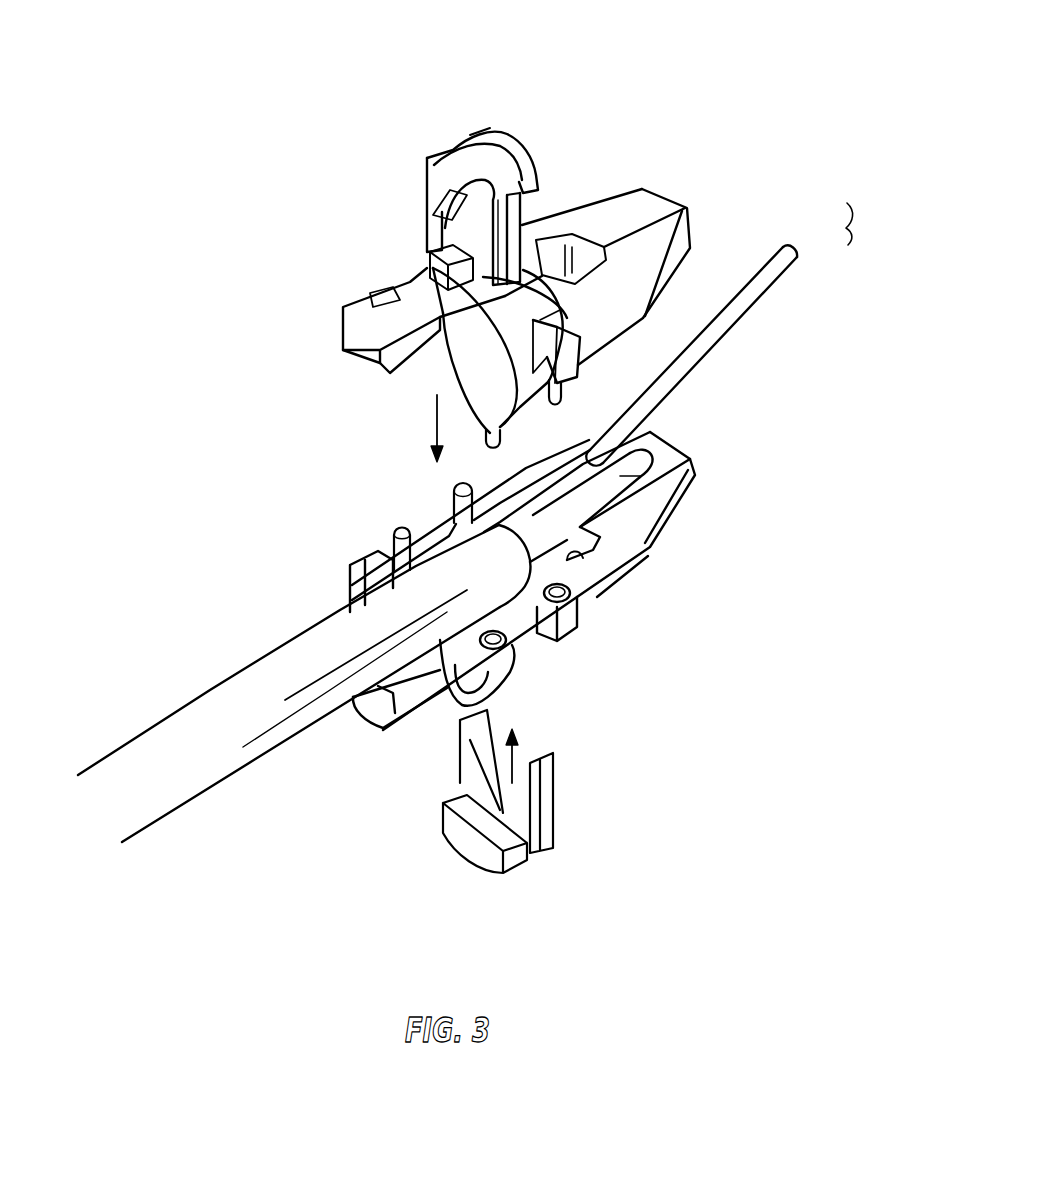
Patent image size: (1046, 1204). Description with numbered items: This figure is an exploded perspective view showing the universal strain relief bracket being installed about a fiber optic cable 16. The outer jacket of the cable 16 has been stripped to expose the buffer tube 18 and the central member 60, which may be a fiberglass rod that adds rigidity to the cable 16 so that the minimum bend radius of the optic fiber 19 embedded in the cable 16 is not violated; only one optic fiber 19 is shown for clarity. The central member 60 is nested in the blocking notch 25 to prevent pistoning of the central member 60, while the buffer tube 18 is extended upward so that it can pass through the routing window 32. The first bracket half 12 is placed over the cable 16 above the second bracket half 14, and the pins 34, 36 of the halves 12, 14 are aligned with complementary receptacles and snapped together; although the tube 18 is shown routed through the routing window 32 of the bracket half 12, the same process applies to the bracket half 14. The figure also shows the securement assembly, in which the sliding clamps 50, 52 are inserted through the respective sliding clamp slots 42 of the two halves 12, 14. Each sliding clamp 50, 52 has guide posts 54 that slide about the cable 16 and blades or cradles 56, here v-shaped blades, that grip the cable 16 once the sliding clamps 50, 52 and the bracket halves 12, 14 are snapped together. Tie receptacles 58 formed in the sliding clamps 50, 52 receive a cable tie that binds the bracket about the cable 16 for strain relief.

The bracket half 12 is at (332, 411).
The bracket half 14 is at (705, 517).
The cable 16 is at (204, 757).
The buffer tube 18 is at (720, 323).
The optic fiber 19 is at (790, 243).
The blocking notch 25 is at (640, 475).
The routing window 32 is at (560, 258).
The pin 34 is at (563, 397).
The pin 36 is at (505, 443).
The sliding clamp slot 42 is at (525, 333).
The sliding clamp 50 is at (510, 137).
The sliding clamp 52 is at (543, 807).
The guide post 54 is at (563, 245).
The blade 56 is at (438, 232).
The tie receptacle 58 is at (457, 137).
The central member 60 is at (633, 463).